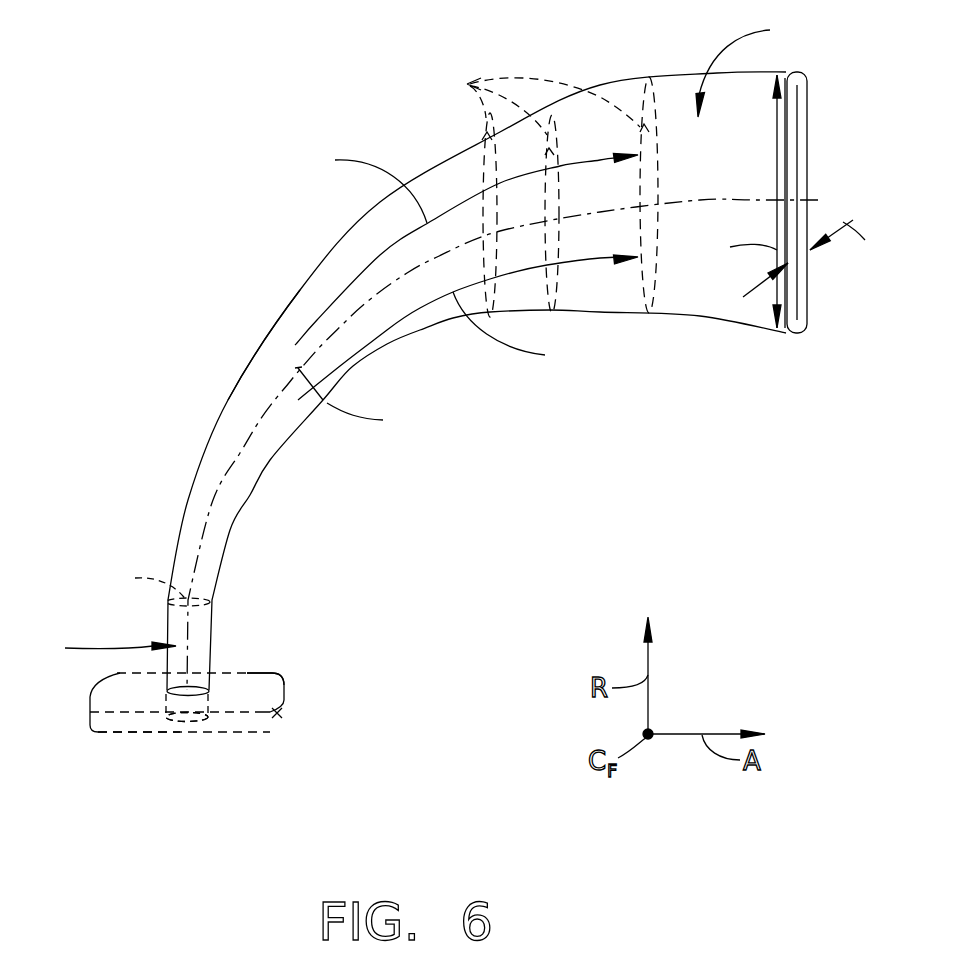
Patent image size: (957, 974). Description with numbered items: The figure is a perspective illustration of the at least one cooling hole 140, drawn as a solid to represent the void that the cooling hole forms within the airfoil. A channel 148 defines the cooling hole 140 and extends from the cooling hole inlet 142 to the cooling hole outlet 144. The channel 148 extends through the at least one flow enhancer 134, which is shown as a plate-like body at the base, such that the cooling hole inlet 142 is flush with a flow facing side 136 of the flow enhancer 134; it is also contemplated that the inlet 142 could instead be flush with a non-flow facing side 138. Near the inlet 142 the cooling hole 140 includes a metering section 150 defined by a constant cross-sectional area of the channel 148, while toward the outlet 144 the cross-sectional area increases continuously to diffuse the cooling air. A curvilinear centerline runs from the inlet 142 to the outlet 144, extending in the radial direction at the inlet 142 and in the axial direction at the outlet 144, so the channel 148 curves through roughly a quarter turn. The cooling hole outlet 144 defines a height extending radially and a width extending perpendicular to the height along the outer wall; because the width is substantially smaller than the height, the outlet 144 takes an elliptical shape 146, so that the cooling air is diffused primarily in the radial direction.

The cooling hole 140 is at (218, 167).
The channel 148 is at (313, 303).
The metering section 150 is at (420, 338).
The elliptical shape 146 is at (810, 104).
The cooling hole outlet 144 is at (797, 134).
The flow enhancer 134 is at (290, 717).
The non-flow facing side 138 is at (250, 685).
The cooling hole inlet 142 is at (190, 716).
The flow facing side 136 is at (140, 733).